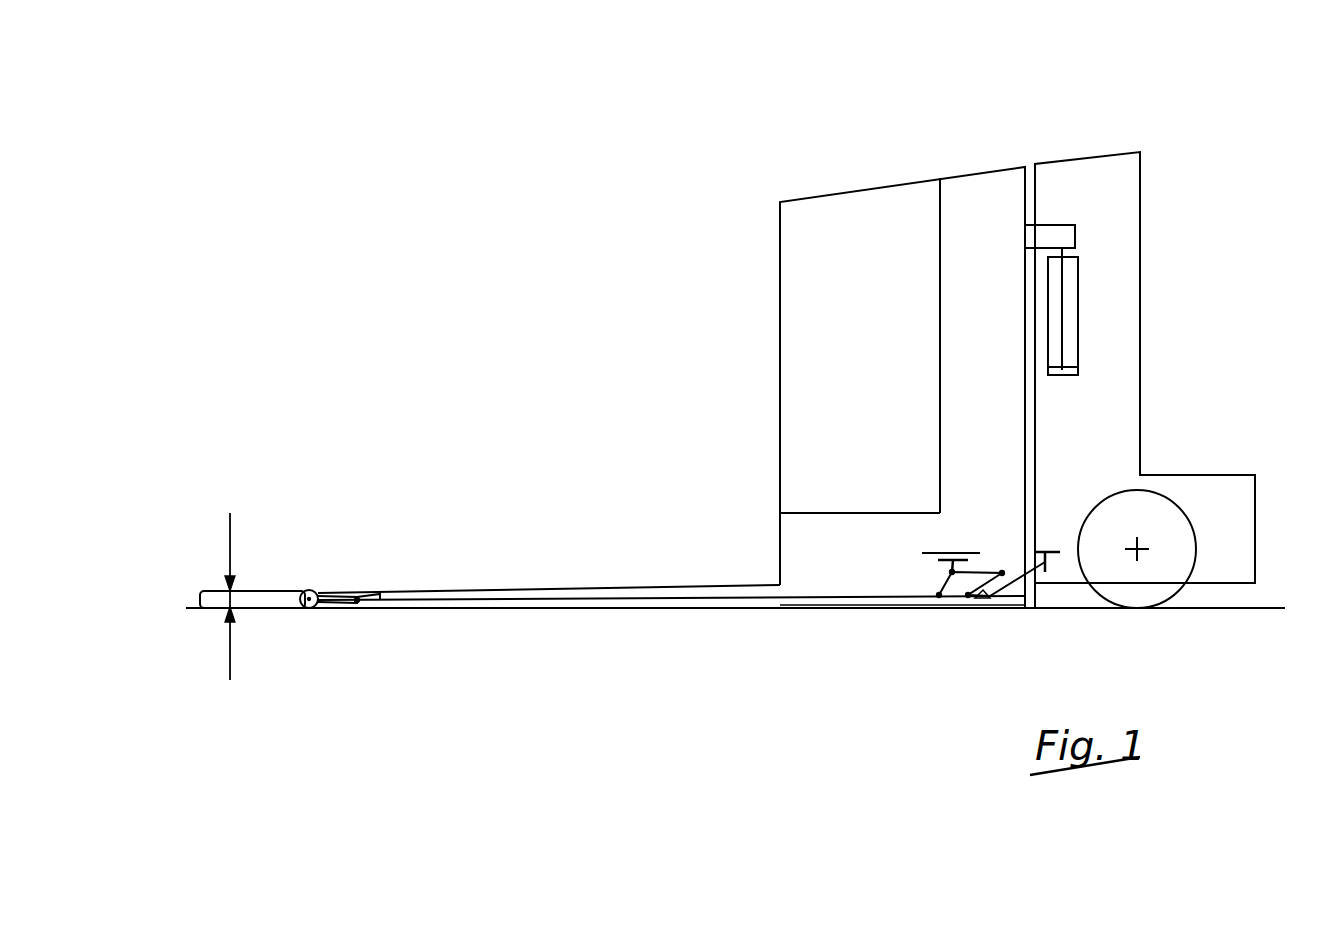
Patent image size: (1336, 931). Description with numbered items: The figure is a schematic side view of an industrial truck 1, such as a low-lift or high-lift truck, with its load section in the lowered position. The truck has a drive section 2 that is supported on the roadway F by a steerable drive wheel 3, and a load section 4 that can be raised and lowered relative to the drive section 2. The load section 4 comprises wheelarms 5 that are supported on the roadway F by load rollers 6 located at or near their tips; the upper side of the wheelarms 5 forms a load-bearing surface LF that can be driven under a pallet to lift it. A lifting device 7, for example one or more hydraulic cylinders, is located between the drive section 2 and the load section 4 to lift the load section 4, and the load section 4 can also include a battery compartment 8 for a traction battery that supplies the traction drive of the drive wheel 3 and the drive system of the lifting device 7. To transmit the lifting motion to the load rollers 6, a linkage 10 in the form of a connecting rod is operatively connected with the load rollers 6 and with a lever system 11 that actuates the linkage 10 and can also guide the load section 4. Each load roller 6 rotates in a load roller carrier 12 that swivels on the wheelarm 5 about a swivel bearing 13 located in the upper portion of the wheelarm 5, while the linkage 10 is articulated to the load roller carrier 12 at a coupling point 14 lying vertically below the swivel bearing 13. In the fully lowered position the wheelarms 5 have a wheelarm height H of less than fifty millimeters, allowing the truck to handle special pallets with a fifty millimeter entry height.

The industrial truck 1 is at (330, 148).
The drive section 2 is at (1118, 398).
The drive wheel 3 is at (1157, 590).
The load section 4 is at (972, 196).
The wheelarm 5 is at (632, 594).
The load roller 6 is at (309, 609).
The lifting device 7 is at (1078, 305).
The battery compartment 8 is at (813, 496).
The linkage 10 is at (822, 598).
The lever system 11 is at (975, 612).
The load roller carrier 12 is at (343, 593).
The swivel bearing 13 is at (365, 595).
The coupling point 14 is at (360, 602).
The load-bearing surface LF is at (512, 586).
The wheelarm height H is at (230, 540).
The roadway F is at (1238, 595).